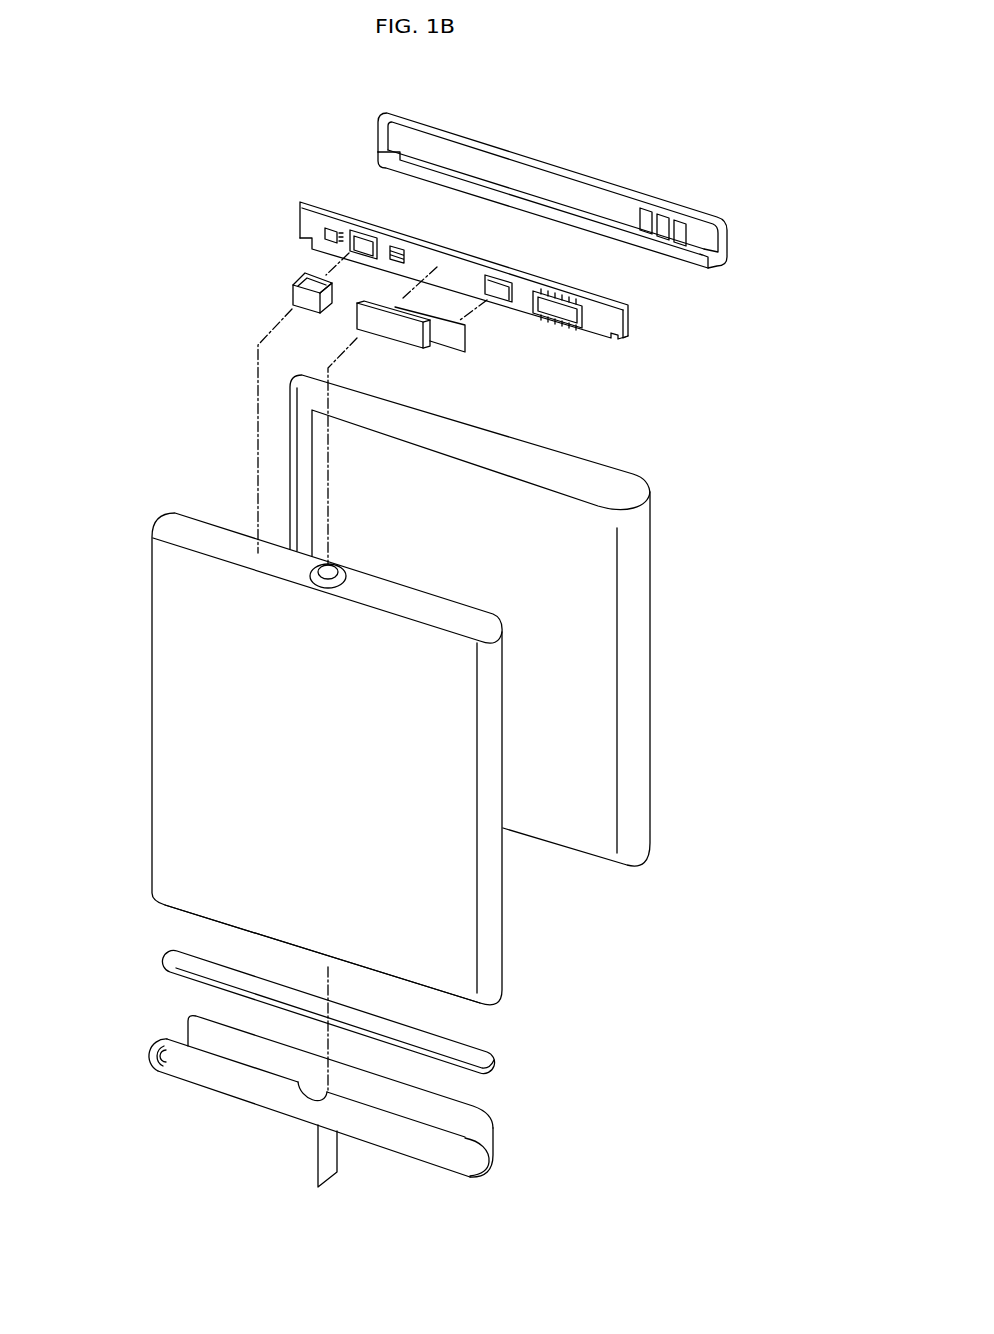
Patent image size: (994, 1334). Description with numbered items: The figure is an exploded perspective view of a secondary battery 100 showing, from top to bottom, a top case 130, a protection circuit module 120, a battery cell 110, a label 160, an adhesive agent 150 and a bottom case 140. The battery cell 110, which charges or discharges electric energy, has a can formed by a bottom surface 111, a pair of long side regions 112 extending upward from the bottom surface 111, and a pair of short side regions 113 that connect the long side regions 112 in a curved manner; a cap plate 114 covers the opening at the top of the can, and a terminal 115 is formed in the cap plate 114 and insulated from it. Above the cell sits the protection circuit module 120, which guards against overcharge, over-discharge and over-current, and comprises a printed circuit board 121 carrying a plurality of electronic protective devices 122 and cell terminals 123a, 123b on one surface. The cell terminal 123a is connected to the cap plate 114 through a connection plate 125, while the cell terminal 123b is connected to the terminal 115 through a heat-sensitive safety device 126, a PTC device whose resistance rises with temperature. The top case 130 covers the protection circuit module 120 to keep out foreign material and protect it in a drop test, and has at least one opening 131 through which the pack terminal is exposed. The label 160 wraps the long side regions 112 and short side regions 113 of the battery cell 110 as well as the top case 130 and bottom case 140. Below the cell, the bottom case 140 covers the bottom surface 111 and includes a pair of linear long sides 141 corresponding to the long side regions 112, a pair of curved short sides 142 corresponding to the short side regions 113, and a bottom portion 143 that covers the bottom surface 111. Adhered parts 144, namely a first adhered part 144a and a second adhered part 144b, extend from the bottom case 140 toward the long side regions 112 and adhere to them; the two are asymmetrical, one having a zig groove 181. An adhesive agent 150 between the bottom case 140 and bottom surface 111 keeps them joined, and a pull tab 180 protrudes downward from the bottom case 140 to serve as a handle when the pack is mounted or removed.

The secondary battery 100 is at (768, 140).
The battery cell 110 is at (146, 514).
The bottom surface 111 is at (173, 913).
The long side regions 112 is at (162, 750).
The short side regions 113 is at (500, 943).
The cap plate 114 is at (188, 526).
The terminal 115 is at (331, 566).
The protection circuit module 120 is at (636, 347).
The printed circuit board 121 is at (604, 311).
The electronic protective devices 122 is at (557, 308).
The cell terminal 123a is at (358, 242).
The cell terminal 123b is at (496, 282).
The connection plate 125 is at (295, 280).
The heat-sensitive safety device 126 is at (440, 353).
The top case 130 is at (695, 216).
The opening 131 is at (640, 206).
The bottom case 140 is at (514, 1144).
The linear long sides 141 is at (445, 1158).
The curved short sides 142 is at (503, 1167).
The bottom portion 143 is at (481, 1161).
The adhered parts 144 is at (86, 1000).
The first adhered part 144a is at (157, 1052).
The second adhered part 144b is at (195, 1027).
The adhesive agent 150 is at (497, 1053).
The label 160 is at (644, 641).
The pull tab 180 is at (338, 1171).
The zig groove 181 is at (305, 1094).